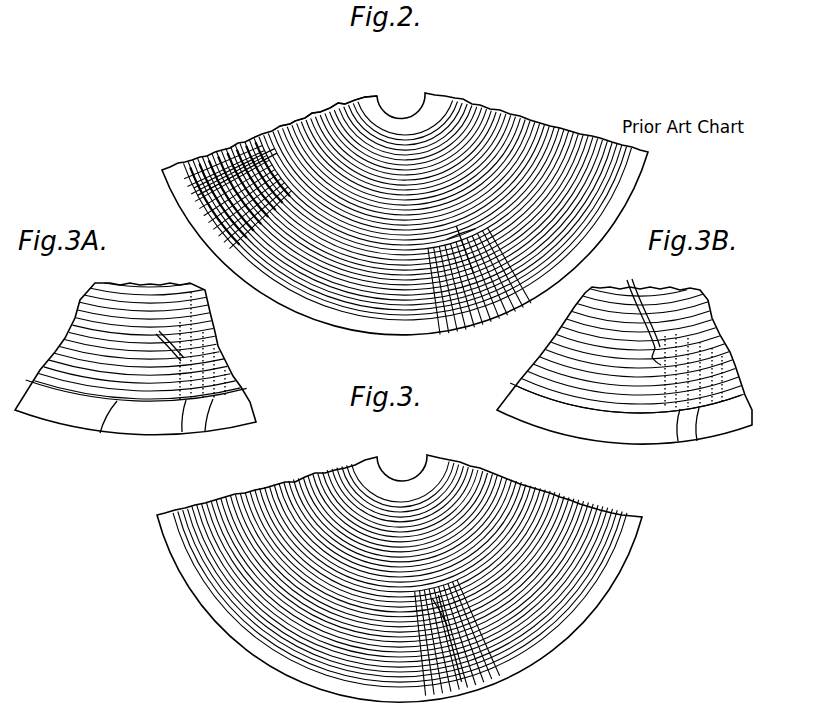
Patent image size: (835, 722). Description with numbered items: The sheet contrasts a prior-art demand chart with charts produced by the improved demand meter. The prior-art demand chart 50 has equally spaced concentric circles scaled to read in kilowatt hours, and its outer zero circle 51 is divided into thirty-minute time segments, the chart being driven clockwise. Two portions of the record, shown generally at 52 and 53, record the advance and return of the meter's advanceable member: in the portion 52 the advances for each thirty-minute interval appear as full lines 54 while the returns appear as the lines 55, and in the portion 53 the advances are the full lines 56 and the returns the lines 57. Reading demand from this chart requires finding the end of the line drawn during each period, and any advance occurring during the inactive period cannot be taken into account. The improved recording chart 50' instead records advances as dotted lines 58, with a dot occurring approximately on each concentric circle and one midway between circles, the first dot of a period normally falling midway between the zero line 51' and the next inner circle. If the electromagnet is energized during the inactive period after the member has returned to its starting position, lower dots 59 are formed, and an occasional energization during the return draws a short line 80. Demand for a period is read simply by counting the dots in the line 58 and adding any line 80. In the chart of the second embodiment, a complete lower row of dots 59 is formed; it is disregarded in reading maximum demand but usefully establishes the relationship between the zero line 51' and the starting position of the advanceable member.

In FIG. 2, the demand chart 50 is at (405, 212).
In FIG. 2, the zero circle 51 is at (424, 247).
In FIG. 2, the portion of the record 52 is at (278, 113).
In FIG. 2, the portion of the record 53 is at (482, 213).
In FIG. 2, the full lines 54 is at (207, 161).
In FIG. 2, the lines 55 is at (242, 158).
In FIG. 3, the lines 55 is at (458, 621).
In FIG. 2, the full lines 56 is at (419, 287).
In FIG. 2, the lines 57 is at (432, 273).
In FIG. 3A, the recording chart 50' is at (135, 359).
In FIG. 3B, the recording chart 50' is at (628, 361).
In FIG. 3, the recording chart 50' is at (399, 578).
In FIG. 3A, the zero line 51' is at (136, 418).
In FIG. 3B, the zero line 51' is at (632, 417).
In FIG. 3, the zero line 51' is at (461, 611).
In FIG. 3A, the dotted lines 58 is at (186, 321).
In FIG. 3B, the dotted lines 58 is at (635, 313).
In FIG. 3, the dotted lines 58 is at (430, 637).
In FIG. 3A, the lower dots 59 is at (200, 431).
In FIG. 3B, the lower dots 59 is at (697, 441).
In FIG. 3A, the short line 80 is at (228, 373).
In FIG. 3B, the short line 80 is at (693, 371).
In FIG. 3, the short line 80 is at (456, 647).